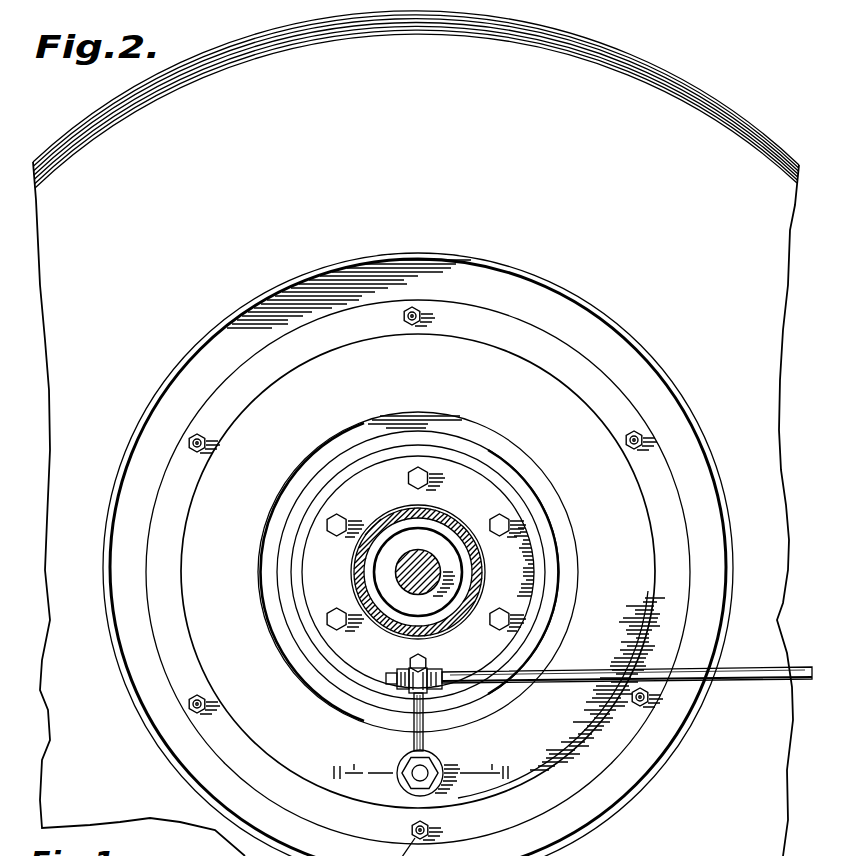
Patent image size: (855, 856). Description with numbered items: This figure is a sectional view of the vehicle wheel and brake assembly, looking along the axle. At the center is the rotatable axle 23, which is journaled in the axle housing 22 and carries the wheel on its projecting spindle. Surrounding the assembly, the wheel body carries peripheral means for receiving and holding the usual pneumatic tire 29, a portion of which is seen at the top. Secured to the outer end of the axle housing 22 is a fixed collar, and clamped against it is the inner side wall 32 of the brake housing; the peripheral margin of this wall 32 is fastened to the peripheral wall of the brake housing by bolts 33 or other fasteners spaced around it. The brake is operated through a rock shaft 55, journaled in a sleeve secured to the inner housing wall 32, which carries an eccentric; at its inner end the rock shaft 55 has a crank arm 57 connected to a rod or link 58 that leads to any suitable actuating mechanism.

The axle housing 22 is at (364, 587).
The rotatable axle 23 is at (414, 555).
The pneumatic tire 29 is at (597, 75).
The inner side wall of brake housing 32 is at (498, 368).
The bolts 33 is at (404, 317).
The rock shaft 55 is at (417, 773).
The crank arm 57 is at (413, 727).
The rod or link 58 is at (562, 685).